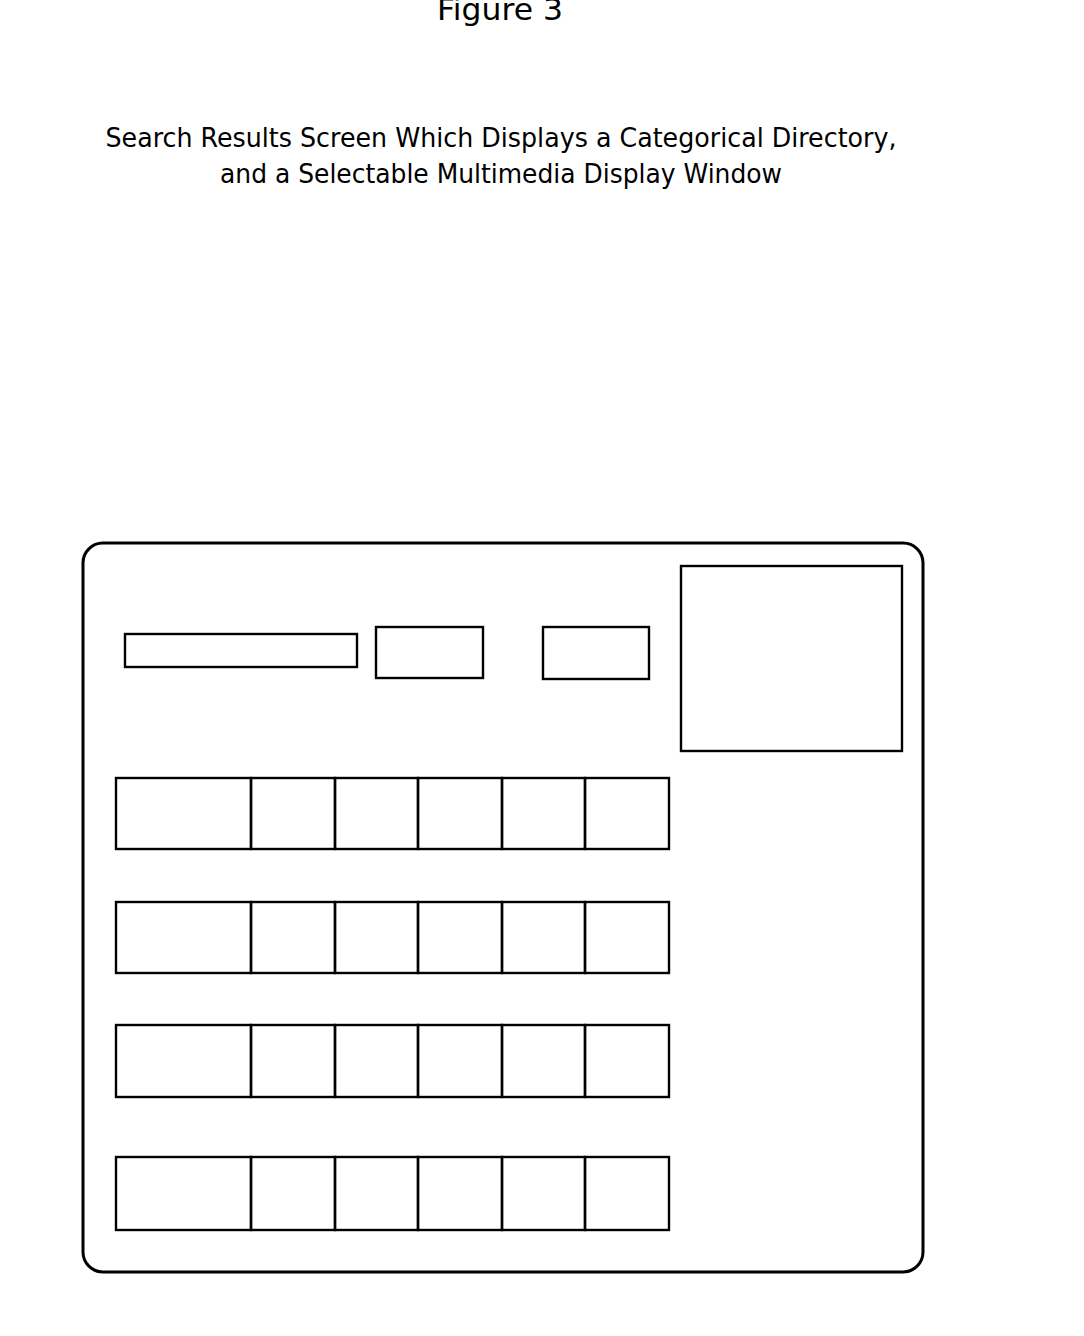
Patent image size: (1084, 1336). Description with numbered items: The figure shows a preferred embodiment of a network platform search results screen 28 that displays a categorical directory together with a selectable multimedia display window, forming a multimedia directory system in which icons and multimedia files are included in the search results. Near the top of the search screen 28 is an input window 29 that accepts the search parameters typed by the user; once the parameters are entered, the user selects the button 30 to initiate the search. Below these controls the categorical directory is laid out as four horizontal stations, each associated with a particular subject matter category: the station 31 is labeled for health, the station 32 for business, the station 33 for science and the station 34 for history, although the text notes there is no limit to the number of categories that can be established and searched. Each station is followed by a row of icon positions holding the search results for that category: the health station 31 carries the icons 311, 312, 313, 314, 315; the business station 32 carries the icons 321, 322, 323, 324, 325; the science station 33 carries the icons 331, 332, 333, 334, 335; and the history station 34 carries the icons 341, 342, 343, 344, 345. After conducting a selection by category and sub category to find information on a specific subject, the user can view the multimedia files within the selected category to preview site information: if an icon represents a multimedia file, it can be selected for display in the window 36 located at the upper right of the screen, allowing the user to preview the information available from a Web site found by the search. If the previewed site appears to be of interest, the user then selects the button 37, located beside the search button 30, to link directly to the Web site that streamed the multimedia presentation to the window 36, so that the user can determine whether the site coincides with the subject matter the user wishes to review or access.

The search screen 28 is at (196, 441).
The input window 29 is at (198, 634).
The button 30 is at (448, 627).
The button 37 is at (615, 627).
The window 36 is at (742, 751).
The station 31 is at (197, 778).
The Health category search result cell 1 311 is at (322, 778).
The Health category search result cell 2 312 is at (406, 778).
The Health category search result cell 3 313 is at (489, 778).
The Health category search result cell 4 314 is at (573, 778).
The Health category search result cell 5 315 is at (656, 778).
The station 32 is at (184, 902).
The Business category search result cell 1 321 is at (322, 902).
The Business category search result cell 2 322 is at (406, 902).
The Business category search result cell 3 323 is at (489, 902).
The Business category search result cell 4 324 is at (573, 902).
The Business category search result cell 5 325 is at (656, 902).
The station 33 is at (184, 1025).
The Science category search result cell 1 331 is at (322, 1025).
The Science category search result cell 2 332 is at (406, 1025).
The Science category search result cell 3 333 is at (489, 1025).
The Science category search result cell 4 334 is at (573, 1025).
The Science category search result cell 5 335 is at (656, 1025).
The station 34 is at (184, 1157).
The History category search result cell 1 341 is at (322, 1157).
The History category search result cell 2 342 is at (406, 1157).
The History category search result cell 3 343 is at (489, 1157).
The History category search result cell 4 344 is at (573, 1157).
The History category search result cell 5 345 is at (656, 1157).